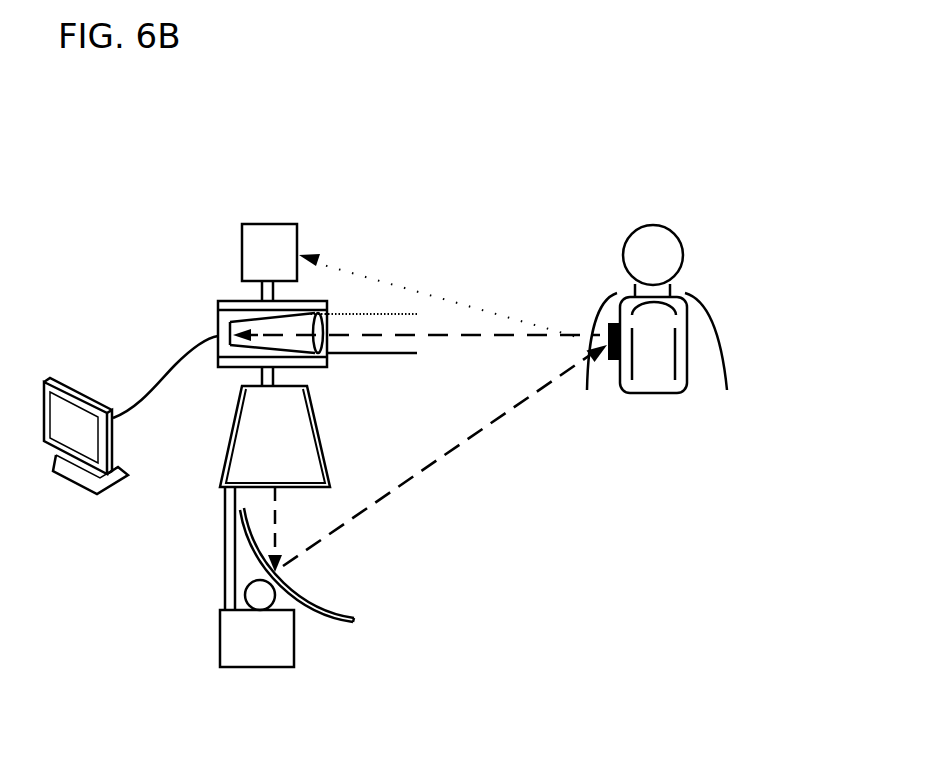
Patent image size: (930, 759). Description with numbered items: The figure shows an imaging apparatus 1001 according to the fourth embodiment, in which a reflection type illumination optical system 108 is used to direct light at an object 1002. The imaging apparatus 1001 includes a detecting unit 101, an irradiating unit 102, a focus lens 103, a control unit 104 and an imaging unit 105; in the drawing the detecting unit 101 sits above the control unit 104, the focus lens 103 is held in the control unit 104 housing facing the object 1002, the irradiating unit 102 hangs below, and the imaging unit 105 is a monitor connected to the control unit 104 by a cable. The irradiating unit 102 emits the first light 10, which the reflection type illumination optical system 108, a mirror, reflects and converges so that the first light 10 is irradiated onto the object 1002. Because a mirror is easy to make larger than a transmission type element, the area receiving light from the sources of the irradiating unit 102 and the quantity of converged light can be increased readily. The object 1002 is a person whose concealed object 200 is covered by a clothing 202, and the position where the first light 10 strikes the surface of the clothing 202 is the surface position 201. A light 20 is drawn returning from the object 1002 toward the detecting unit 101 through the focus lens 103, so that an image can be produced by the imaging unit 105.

The imaging apparatus 1001 is at (200, 104).
The object 1002 is at (614, 126).
The detecting unit 101 is at (270, 224).
The focus lens 103 is at (318, 318).
The control unit 104 is at (247, 301).
The imaging unit 105 is at (218, 323).
The irradiating unit 102 is at (222, 478).
The reflection type illumination optical system 108 is at (354, 624).
The reflected light 20 is at (412, 280).
The first light 10 is at (436, 469).
The concealed object 200 is at (621, 368).
The surface position 201 is at (606, 338).
The clothing 202 is at (718, 330).